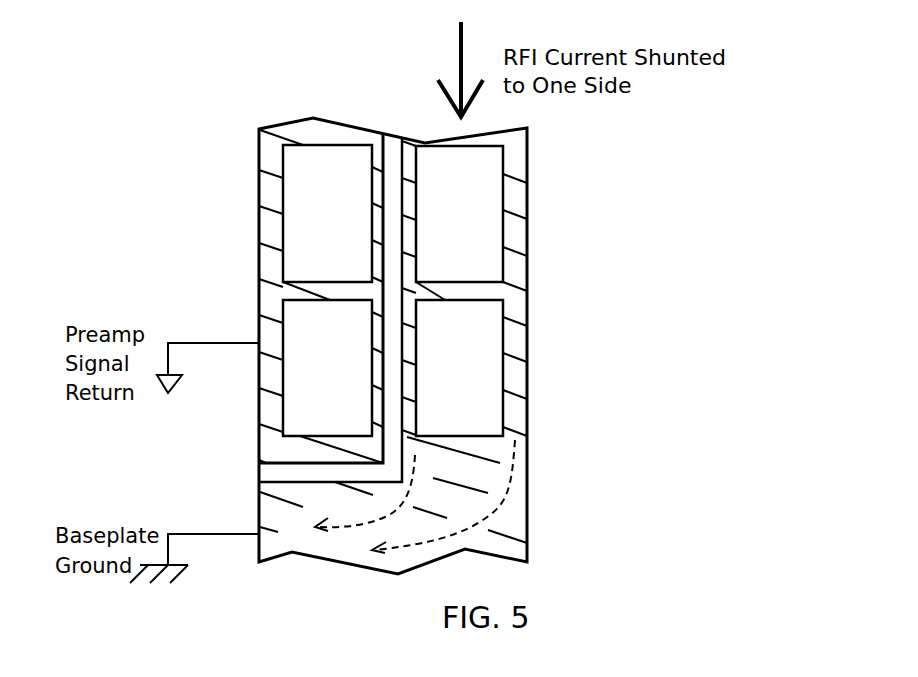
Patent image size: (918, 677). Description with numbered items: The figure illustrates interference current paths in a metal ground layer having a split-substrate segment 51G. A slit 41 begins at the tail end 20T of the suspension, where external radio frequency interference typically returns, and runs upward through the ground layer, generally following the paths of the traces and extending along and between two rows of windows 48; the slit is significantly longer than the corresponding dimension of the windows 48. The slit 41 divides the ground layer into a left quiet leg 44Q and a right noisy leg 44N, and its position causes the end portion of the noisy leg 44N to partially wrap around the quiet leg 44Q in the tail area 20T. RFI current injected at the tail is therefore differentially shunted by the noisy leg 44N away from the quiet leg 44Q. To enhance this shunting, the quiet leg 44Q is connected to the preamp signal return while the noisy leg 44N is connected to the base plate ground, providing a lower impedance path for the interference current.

The split-substrate segment 51G is at (222, 154).
The quiet leg 44Q is at (259, 302).
The windows 48 is at (341, 223).
The slit 41 is at (259, 473).
The noisy leg 44N is at (527, 505).
The tail end 20T is at (338, 563).